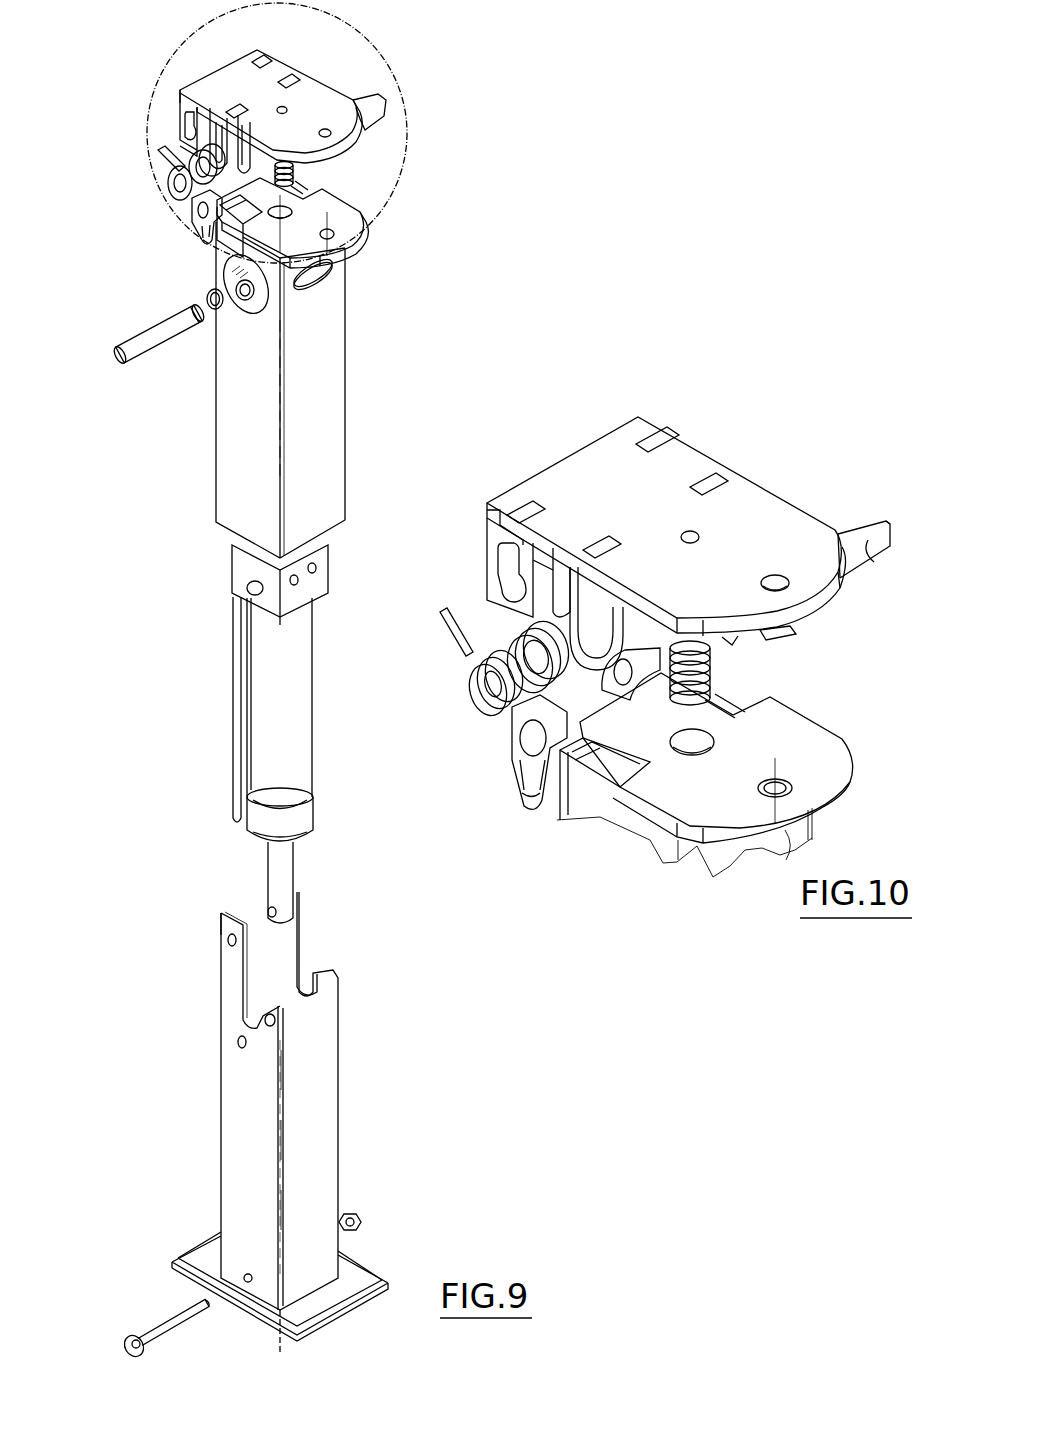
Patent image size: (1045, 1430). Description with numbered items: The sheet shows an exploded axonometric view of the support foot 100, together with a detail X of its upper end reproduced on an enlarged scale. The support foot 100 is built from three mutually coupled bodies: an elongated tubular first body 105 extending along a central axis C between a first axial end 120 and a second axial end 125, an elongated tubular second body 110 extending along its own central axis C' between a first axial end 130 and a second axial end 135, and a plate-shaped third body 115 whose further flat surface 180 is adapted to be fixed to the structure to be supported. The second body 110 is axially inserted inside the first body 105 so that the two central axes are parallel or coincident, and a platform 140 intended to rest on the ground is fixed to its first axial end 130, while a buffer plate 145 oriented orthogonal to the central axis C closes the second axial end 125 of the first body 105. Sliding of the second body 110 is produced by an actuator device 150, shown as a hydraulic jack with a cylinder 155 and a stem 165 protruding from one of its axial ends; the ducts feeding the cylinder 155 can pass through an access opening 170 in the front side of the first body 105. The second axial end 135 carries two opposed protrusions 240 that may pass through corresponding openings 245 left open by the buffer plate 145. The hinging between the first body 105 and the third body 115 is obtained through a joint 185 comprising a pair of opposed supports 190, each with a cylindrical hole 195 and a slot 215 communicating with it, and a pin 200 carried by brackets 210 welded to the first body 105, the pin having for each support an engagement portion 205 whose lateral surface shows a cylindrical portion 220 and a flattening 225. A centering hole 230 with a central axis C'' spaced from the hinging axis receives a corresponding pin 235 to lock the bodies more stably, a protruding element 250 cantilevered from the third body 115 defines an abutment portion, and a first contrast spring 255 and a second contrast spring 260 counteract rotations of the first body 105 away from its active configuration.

In FIG. 9, the support foot 100 is at (122, 102).
In FIG. 9, the first body 105 is at (326, 372).
In FIG. 9, the second body 110 is at (326, 1108).
In FIG. 9, the third body 115 is at (238, 82).
In FIG. 10, the third body 115 is at (600, 465).
In FIG. 9, the first axial end 120 is at (226, 542).
In FIG. 9, the second axial end 125 is at (350, 206).
In FIG. 9, the first axial end 130 is at (312, 1298).
In FIG. 9, the second axial end 135 is at (225, 892).
In FIG. 9, the platform 140 is at (178, 1258).
In FIG. 9, the buffer plate 145 is at (352, 232).
In FIG. 10, the buffer plate 145 is at (820, 748).
In FIG. 9, the actuator device 150 is at (224, 710).
In FIG. 9, the cylinder 155 is at (294, 734).
In FIG. 9, the stem 165 is at (284, 872).
In FIG. 9, the access opening 170 is at (322, 278).
In FIG. 9, the further flat surface 180 is at (328, 103).
In FIG. 10, the further flat surface 180 is at (676, 490).
In FIG. 9, the joint 185 is at (168, 216).
In FIG. 10, the support 190 is at (490, 535).
In FIG. 10, the cylindrical hole 195 is at (516, 604).
In FIG. 10, the pin 200 is at (846, 582).
In FIG. 10, the engagement portion 205 is at (874, 530).
In FIG. 10, the bracket 210 is at (524, 794).
In FIG. 10, the slot 215 is at (494, 562).
In FIG. 10, the cylindrical portion 220 is at (860, 528).
In FIG. 10, the flattening 225 is at (882, 552).
In FIG. 9, the centering hole 230 is at (360, 240).
In FIG. 10, the centering hole 230 is at (796, 786).
In FIG. 10, the pin 235 is at (788, 628).
In FIG. 9, the protrusion 240 is at (225, 928).
In FIG. 10, the opening 245 is at (598, 782).
In FIG. 9, the protruding element 250 is at (232, 152).
In FIG. 10, the protruding element 250 is at (546, 686).
In FIG. 10, the first contrast spring 255 is at (470, 682).
In FIG. 10, the second contrast spring 260 is at (724, 662).
In FIG. 9, the detail X is at (405, 100).
In FIG. 9, the central axis C is at (331, 400).
In FIG. 9, the central axis C' is at (210, 1160).
In FIG. 10, the central axis C'' is at (840, 829).